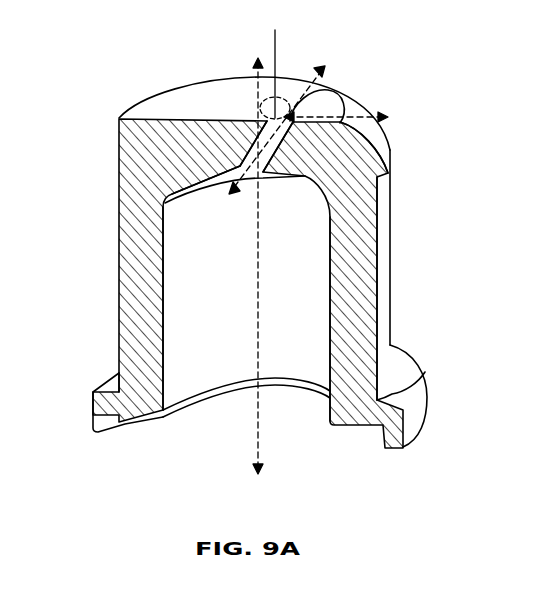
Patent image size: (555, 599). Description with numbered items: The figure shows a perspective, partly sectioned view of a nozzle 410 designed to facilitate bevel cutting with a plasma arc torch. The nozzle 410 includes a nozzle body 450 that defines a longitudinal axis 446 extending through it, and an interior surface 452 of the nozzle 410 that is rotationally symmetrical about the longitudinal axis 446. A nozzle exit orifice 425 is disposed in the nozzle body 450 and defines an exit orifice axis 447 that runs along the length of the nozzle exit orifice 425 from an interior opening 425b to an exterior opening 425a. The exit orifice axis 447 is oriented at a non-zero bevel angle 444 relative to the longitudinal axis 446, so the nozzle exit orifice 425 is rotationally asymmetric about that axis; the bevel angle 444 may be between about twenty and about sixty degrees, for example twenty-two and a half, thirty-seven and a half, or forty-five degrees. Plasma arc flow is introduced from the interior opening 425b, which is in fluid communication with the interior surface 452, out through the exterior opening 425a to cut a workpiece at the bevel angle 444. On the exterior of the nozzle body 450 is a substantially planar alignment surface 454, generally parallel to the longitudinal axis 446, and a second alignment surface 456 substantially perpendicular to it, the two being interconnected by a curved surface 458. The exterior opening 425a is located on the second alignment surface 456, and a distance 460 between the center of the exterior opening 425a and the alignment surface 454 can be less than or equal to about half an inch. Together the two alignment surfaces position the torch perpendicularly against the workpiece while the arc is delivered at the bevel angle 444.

The nozzle 410 is at (480, 178).
The nozzle exit orifice 425 is at (253, 147).
The exterior opening 425a is at (274, 61).
The interior opening 425b is at (167, 193).
The bevel angle 444 is at (280, 97).
The longitudinal axis 446 is at (282, 267).
The exit orifice axis 447 is at (295, 120).
The nozzle body 450 is at (353, 266).
The interior surface 452 is at (193, 258).
The alignment surface 454 is at (363, 305).
The second alignment surface 456 is at (203, 98).
The curved surface 458 is at (375, 145).
The distance 460 is at (355, 117).